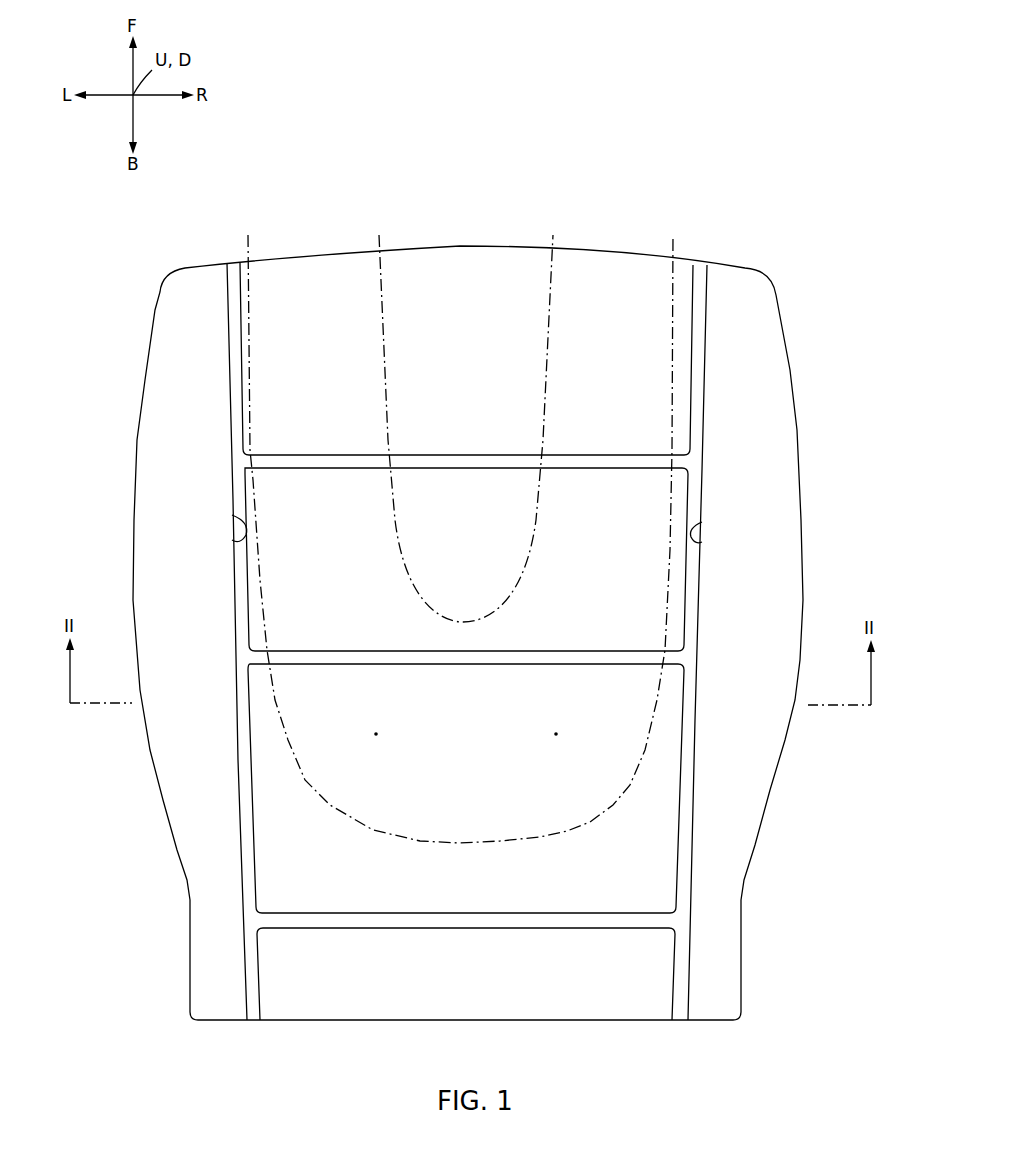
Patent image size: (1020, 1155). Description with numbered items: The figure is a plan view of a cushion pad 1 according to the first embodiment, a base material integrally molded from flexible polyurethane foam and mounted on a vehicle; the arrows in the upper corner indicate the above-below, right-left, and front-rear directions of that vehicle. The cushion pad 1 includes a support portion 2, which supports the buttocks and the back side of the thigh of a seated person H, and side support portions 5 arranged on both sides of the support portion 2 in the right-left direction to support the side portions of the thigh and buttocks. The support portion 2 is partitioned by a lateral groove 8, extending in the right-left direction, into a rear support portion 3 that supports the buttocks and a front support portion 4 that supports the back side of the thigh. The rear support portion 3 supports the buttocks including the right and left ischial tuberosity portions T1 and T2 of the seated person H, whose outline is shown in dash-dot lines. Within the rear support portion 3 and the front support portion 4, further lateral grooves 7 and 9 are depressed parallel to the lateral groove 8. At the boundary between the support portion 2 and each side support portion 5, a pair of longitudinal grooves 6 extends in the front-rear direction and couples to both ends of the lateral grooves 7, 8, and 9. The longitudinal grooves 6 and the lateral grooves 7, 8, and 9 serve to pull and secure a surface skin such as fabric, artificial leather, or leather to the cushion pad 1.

The cushion pad 1 is at (637, 122).
The support portion 2 is at (445, 217).
The rear support portion 3 is at (662, 812).
The front support portion 4 is at (653, 345).
The side support portion 5 is at (160, 405).
The longitudinal groove 6 is at (232, 540).
The lateral groove 7 is at (431, 928).
The lateral groove 8 is at (481, 665).
The lateral groove 9 is at (584, 468).
The ischial tuberosity portion T1 is at (376, 734).
The ischial tuberosity portion T2 is at (556, 734).
The seated person H is at (555, 833).